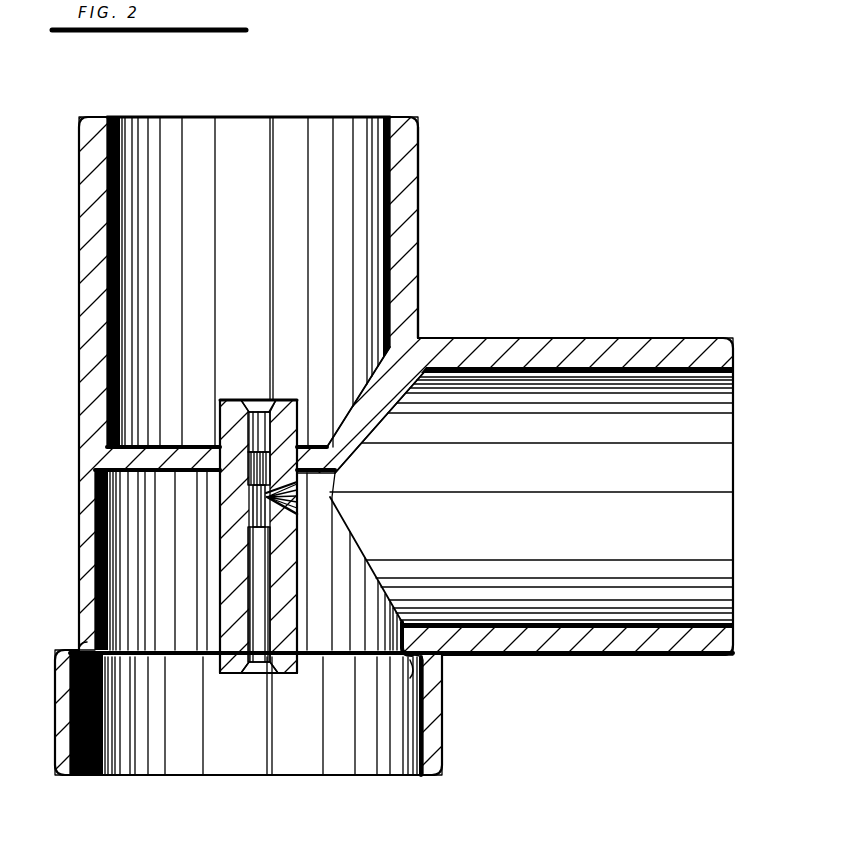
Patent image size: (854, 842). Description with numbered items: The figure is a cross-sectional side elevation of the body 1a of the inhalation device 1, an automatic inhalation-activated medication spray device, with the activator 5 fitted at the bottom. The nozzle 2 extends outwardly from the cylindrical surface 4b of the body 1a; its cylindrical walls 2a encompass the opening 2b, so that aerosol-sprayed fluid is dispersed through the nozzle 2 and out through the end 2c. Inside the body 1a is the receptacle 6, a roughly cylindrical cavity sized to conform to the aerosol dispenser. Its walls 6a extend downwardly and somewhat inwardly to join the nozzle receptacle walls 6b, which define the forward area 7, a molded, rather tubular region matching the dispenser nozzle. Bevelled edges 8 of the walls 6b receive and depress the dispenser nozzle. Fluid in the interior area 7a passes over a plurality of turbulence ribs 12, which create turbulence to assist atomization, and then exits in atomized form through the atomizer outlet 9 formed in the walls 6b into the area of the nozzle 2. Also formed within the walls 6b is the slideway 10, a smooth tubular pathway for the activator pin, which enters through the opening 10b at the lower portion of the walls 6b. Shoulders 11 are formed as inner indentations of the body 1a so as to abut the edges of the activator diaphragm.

The inhalation device 1 is at (473, 279).
The body 1a is at (420, 218).
The nozzle 2 is at (703, 477).
The cylindrical walls 2a is at (648, 343).
The opening 2b is at (705, 378).
The end 2c is at (733, 560).
The cylindrical surface 4b is at (420, 253).
The activator 5 is at (440, 745).
The receptacle 6 is at (320, 138).
The walls 6a is at (132, 120).
The nozzle receptacle walls 6b is at (227, 418).
The forward area 7 is at (260, 437).
The interior area 7a is at (257, 517).
The bevelled edges 8 is at (262, 400).
The atomizer outlet 9 is at (290, 502).
The slideway 10 is at (260, 573).
The opening 10b is at (260, 673).
The shoulders 11 is at (78, 650).
The turbulence ribs 12 is at (330, 473).